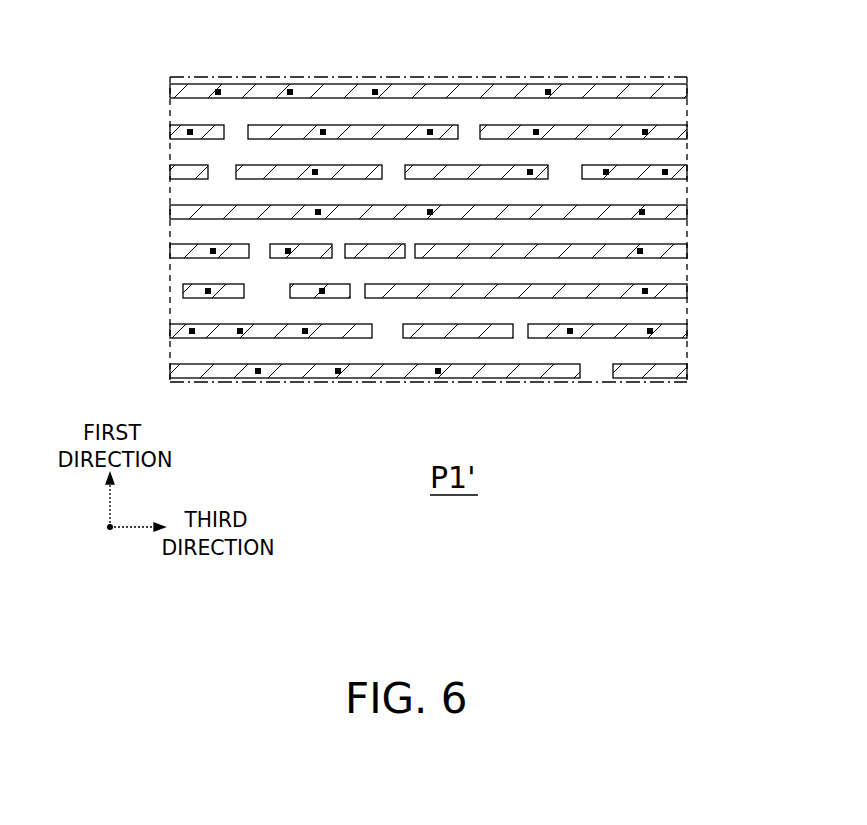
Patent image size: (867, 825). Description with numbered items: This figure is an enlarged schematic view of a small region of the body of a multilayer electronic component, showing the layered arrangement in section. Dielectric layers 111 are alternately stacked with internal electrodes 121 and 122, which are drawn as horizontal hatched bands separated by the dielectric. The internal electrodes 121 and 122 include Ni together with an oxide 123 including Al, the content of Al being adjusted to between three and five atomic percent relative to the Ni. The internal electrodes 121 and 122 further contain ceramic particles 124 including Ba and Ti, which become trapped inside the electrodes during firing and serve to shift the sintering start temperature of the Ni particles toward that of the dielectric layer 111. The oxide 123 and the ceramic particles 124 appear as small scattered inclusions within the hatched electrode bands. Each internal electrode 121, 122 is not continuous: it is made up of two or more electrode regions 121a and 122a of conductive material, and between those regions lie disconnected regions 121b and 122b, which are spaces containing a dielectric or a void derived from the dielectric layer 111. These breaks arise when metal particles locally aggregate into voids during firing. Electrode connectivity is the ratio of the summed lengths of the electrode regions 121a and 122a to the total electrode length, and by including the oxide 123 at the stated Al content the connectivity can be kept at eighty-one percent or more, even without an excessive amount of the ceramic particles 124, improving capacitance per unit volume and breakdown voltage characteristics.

The dielectric layer 111 is at (687, 108).
The internal electrode 121 is at (452, 144).
The electrode region 121a is at (567, 250).
The disconnected region 121b is at (413, 250).
The internal electrode 122 is at (458, 358).
The electrode region 122a is at (545, 292).
The disconnected region 122b is at (355, 292).
The oxide including Al 123 is at (687, 215).
The ceramic particles including Ba and Ti 124 is at (623, 330).